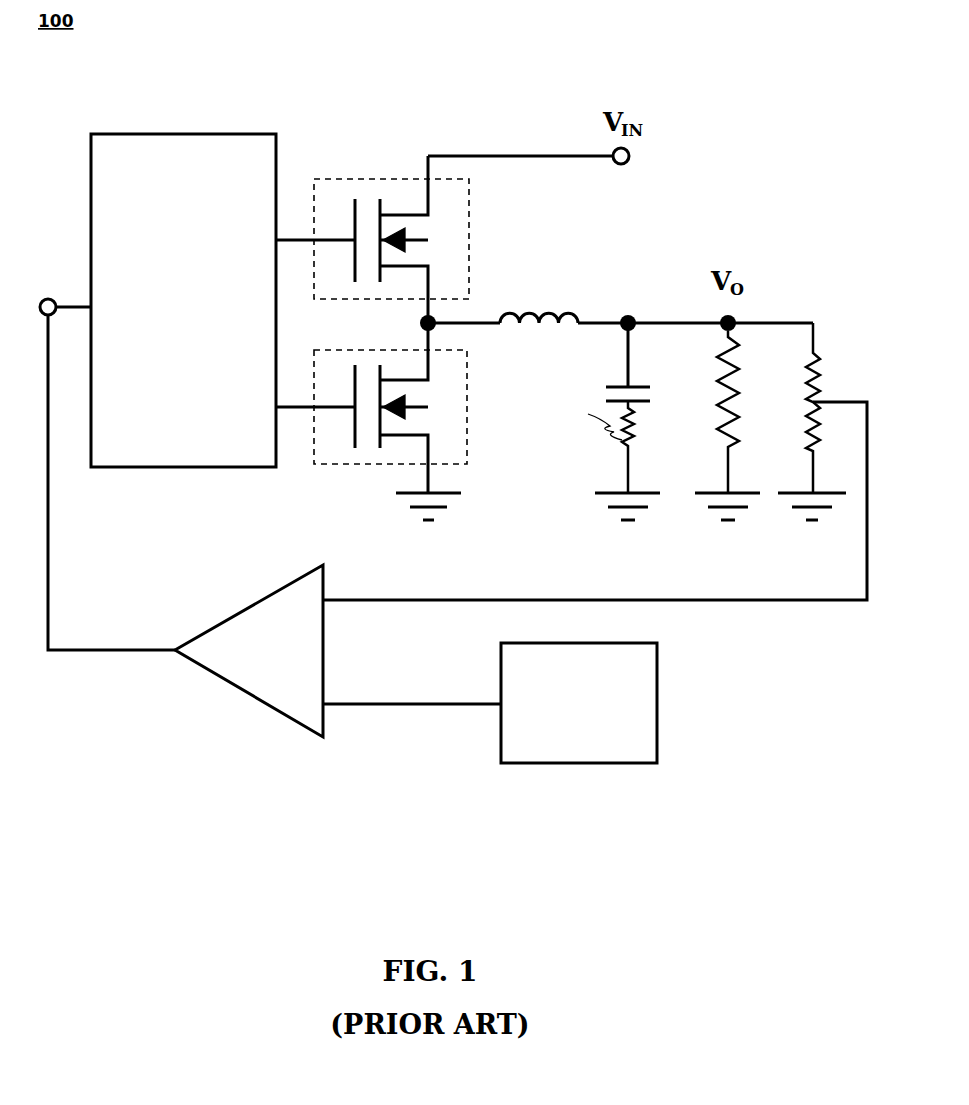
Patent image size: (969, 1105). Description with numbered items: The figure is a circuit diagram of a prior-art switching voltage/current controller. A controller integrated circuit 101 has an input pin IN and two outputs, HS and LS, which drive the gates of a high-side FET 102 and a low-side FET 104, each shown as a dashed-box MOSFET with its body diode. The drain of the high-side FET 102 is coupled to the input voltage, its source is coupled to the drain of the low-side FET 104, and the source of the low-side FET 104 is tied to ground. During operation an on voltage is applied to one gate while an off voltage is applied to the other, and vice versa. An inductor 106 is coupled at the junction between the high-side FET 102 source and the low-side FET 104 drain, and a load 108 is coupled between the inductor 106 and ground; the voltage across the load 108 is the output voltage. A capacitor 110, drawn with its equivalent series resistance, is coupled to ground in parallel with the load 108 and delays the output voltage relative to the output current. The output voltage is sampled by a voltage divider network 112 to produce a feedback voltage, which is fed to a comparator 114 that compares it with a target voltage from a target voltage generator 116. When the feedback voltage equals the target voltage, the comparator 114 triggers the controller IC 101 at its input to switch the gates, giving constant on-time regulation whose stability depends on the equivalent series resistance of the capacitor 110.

The controller integrated circuit 101 is at (90, 134).
The high-side FET 102 is at (390, 176).
The low-side FET 104 is at (384, 355).
The inductor 106 is at (554, 304).
The load 108 is at (724, 382).
The capacitor 110 is at (616, 386).
The voltage divider network 112 is at (826, 351).
The comparator 114 is at (338, 651).
The target voltage generator 116 is at (579, 703).